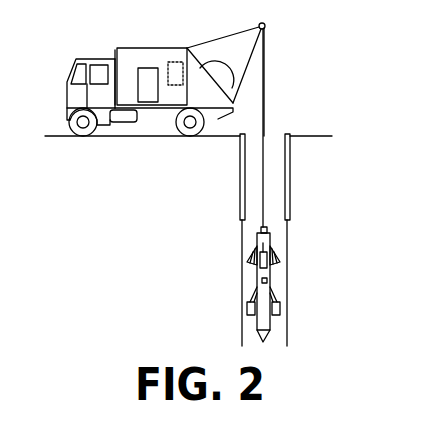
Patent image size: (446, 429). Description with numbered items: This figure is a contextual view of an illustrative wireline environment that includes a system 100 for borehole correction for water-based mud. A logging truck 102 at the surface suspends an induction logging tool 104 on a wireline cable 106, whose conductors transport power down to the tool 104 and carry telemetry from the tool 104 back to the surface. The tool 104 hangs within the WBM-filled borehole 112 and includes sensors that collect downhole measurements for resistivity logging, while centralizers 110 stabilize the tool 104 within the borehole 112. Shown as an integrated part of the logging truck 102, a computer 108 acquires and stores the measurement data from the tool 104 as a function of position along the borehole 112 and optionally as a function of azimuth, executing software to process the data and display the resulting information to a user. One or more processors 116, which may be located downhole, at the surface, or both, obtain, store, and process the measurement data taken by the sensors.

The system 100 is at (334, 251).
The logging truck 102 is at (133, 48).
The induction logging tool 104 is at (258, 325).
The wireline cable 106 is at (265, 133).
The computer 108 is at (178, 62).
The centralizers 110 is at (253, 264).
The WBM-filled borehole 112 is at (238, 233).
The processors 116 is at (268, 281).